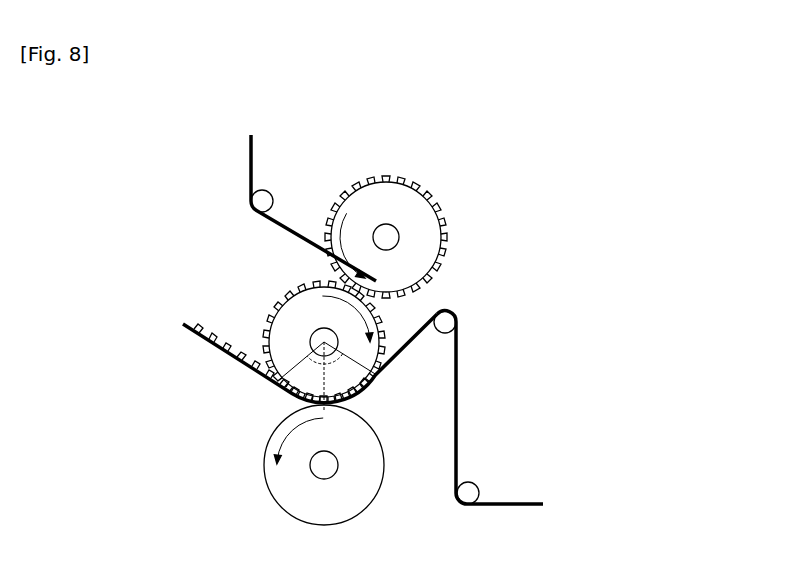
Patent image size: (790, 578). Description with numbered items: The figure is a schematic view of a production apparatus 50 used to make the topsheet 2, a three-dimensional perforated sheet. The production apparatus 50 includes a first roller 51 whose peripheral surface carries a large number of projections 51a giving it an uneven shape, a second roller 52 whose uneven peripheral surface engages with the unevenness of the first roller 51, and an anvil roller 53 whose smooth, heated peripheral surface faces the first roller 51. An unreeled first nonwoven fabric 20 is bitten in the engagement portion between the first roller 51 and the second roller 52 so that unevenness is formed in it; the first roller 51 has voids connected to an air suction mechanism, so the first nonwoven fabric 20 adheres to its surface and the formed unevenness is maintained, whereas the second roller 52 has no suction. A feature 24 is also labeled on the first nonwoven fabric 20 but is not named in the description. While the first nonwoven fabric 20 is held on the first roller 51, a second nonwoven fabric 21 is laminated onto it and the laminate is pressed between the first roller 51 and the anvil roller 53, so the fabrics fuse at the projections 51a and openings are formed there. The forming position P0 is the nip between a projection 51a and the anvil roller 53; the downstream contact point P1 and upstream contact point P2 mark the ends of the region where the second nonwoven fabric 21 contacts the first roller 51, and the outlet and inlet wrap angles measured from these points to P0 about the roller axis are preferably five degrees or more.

The topsheet 2 is at (299, 344).
The first nonwoven fabric 20 is at (254, 152).
The second nonwoven fabric 21 is at (458, 395).
The belt teeth 24 is at (215, 335).
The production apparatus 50 is at (370, 319).
The first roller 51 is at (305, 317).
The projections 51a is at (268, 326).
The second roller 52 is at (428, 230).
The anvil roller 53 is at (353, 503).
The forming position of the opening P0 is at (324, 406).
The downstream contact point P1 is at (279, 383).
The upstream contact point P2 is at (377, 370).